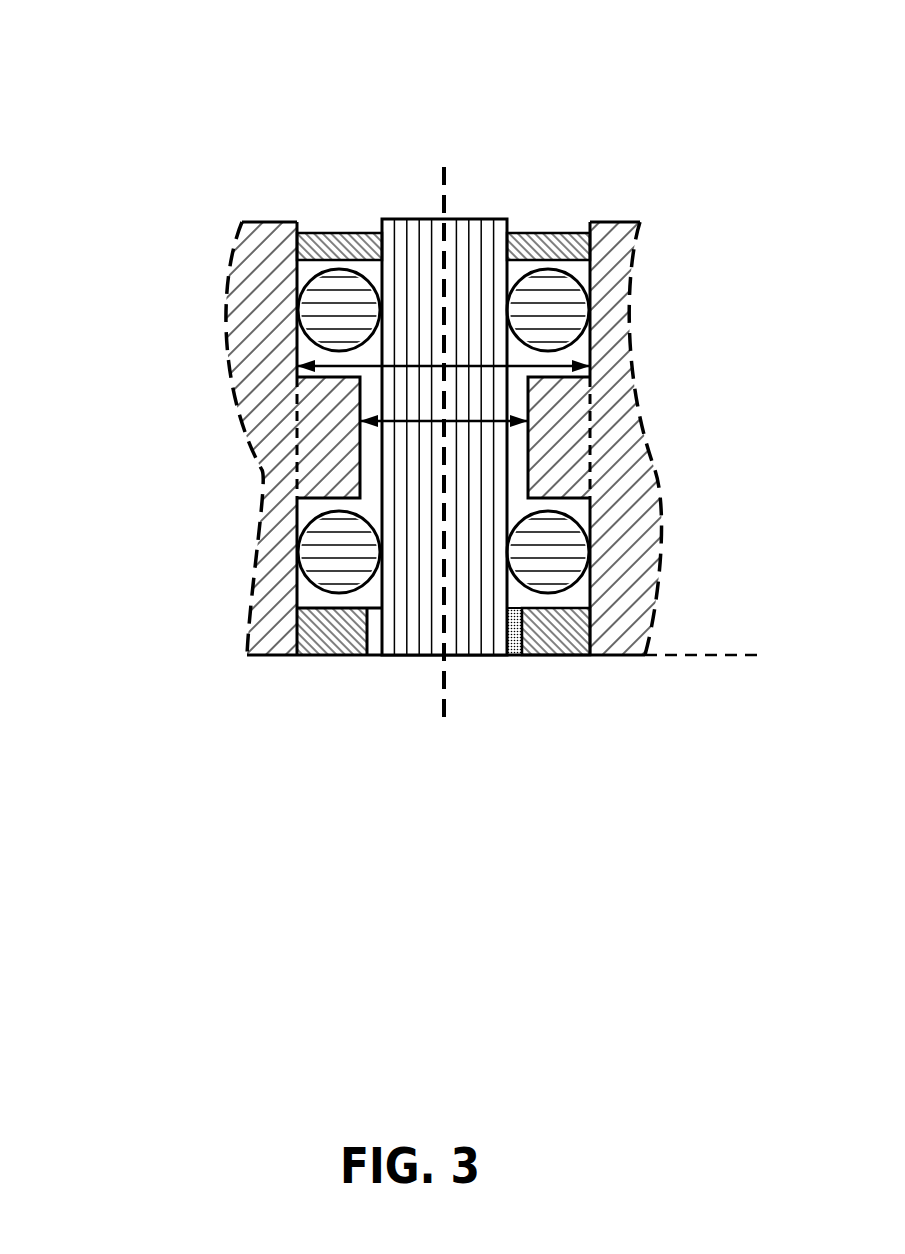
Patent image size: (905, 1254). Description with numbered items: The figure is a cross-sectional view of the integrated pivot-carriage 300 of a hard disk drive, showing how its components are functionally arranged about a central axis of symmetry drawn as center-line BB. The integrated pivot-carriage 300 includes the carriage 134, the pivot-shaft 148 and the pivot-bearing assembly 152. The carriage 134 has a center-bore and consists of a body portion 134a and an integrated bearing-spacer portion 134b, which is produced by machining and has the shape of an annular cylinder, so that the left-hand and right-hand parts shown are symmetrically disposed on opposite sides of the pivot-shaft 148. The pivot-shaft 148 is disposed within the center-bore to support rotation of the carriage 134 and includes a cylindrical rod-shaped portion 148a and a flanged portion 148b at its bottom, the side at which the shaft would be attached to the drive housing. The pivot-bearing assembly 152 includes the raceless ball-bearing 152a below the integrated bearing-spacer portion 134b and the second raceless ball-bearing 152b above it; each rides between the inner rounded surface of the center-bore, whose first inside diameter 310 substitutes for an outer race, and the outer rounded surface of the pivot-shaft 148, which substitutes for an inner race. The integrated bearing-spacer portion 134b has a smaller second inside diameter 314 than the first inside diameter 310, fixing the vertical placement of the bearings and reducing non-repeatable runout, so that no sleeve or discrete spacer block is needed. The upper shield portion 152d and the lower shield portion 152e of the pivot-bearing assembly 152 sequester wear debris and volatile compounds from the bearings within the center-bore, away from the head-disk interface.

The integrated pivot-carriage 300 is at (150, 108).
The first inside diameter 310 is at (343, 365).
The second inside diameter 314 is at (417, 421).
The carriage 134 is at (100, 370).
The body portion 134a is at (263, 363).
The integrated bearing-spacer portion 134b is at (337, 422).
The pivot-shaft 148 is at (100, 510).
The rod-shaped portion 148a is at (417, 567).
The flanged portion 148b is at (375, 628).
The pivot-bearing assembly 152 is at (787, 272).
The raceless ball-bearing 152a is at (545, 552).
The second raceless ball-bearing 152b is at (540, 303).
The upper shield portion 152d is at (558, 243).
The lower shield portion 152e is at (557, 632).